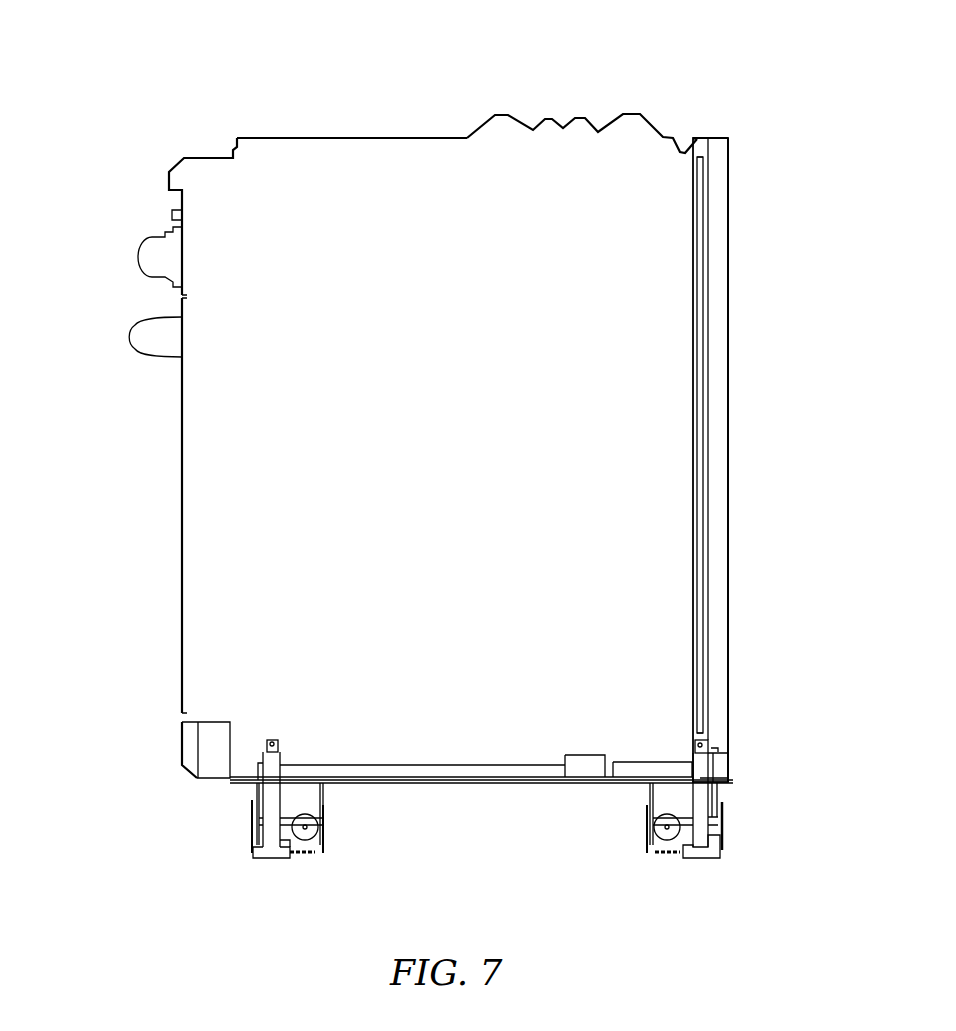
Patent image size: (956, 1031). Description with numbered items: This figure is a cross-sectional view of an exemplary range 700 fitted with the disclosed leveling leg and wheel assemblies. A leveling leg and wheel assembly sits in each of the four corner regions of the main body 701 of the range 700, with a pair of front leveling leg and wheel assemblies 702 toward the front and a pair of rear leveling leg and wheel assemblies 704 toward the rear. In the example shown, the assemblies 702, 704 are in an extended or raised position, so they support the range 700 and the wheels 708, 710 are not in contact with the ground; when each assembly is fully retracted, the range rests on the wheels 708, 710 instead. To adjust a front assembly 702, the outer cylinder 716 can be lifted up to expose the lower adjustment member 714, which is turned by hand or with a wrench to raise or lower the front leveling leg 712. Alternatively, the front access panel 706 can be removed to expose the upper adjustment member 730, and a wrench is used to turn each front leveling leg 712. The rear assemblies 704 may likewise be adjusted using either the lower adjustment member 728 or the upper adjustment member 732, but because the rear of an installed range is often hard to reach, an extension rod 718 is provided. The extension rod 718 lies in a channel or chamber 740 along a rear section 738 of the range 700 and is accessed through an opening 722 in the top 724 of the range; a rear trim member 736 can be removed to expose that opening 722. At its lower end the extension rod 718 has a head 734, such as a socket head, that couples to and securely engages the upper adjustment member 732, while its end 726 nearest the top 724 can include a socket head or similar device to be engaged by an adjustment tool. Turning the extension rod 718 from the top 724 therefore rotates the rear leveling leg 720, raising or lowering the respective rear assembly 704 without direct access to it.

The range 700 is at (381, 66).
The main body 701 is at (748, 528).
The front leveling leg and wheel assembly 702 is at (234, 788).
The rear leveling leg and wheel assembly 704 is at (690, 819).
The front access panel 706 is at (183, 735).
The wheel 708 is at (312, 830).
The wheel 710 is at (660, 828).
The front leveling leg 712 is at (278, 745).
The lower adjustment member 714 is at (265, 845).
The outer cylinder 716 is at (305, 852).
The extension rod 718 is at (703, 346).
The rear leveling leg 720 is at (702, 762).
The opening 722 is at (688, 136).
The top 724 is at (716, 137).
The end of extension rod 726 is at (698, 168).
The lower adjustment member 728 is at (708, 852).
The upper adjustment member 730 is at (263, 752).
The upper adjustment member 732 is at (710, 746).
The head 734 is at (702, 733).
The rear trim member 736 is at (706, 131).
The rear section 738 is at (730, 213).
The channel or chamber 740 is at (708, 296).